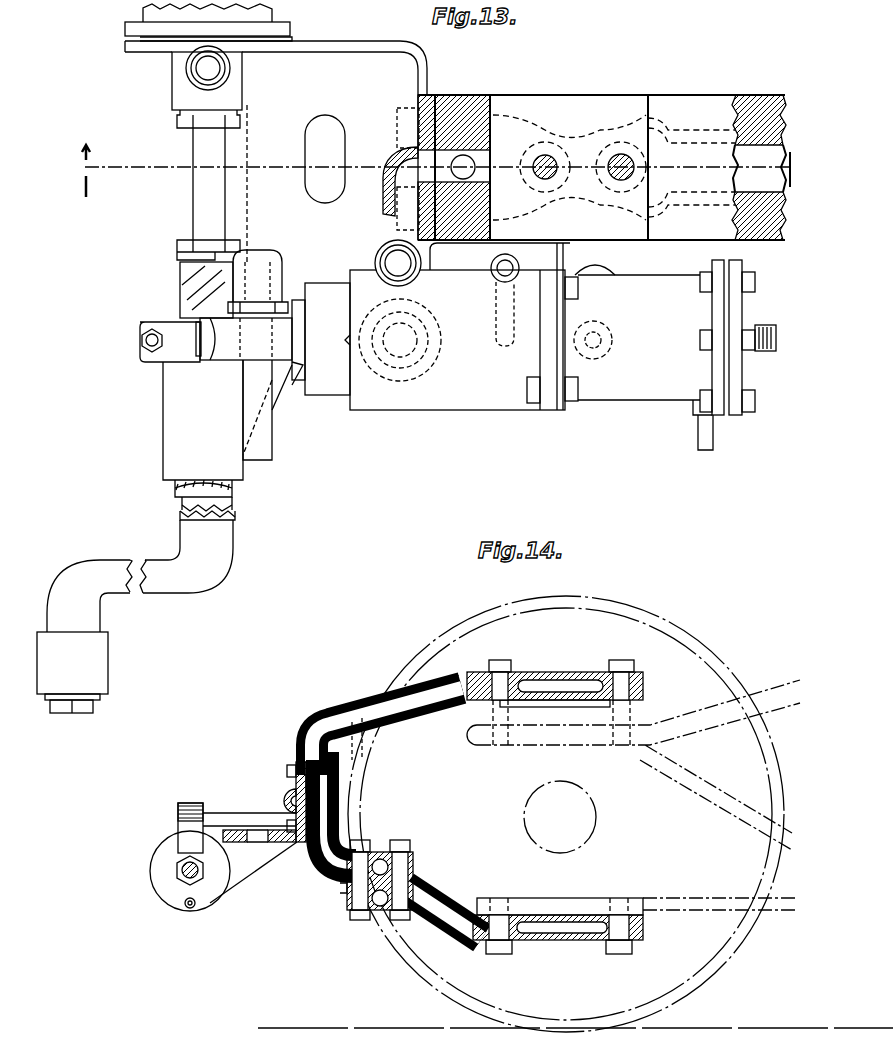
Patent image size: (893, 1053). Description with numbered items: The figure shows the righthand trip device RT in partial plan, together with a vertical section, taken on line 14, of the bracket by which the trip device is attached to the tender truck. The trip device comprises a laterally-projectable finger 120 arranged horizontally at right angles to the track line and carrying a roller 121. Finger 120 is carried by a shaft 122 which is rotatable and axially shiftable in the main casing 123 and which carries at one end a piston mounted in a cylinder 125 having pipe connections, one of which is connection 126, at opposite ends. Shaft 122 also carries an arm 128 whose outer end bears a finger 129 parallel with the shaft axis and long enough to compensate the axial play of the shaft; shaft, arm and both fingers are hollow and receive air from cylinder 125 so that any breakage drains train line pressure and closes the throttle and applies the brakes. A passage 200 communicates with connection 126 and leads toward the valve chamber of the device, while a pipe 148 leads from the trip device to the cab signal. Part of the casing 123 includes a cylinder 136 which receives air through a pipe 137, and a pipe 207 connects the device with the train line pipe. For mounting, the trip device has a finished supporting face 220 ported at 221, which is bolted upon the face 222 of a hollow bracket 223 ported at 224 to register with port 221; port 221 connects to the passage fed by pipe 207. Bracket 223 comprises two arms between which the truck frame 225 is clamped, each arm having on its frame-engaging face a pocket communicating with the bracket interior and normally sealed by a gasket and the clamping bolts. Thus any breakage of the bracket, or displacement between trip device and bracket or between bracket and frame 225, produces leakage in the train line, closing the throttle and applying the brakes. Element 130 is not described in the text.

In FIG. 13, the section line 14- 14 is at (423, 171).
In FIG. 13, the cylinder 125 is at (155, 12).
In FIG. 14, the cylinder 125 is at (212, 888).
In FIG. 13, the pipe connection 126 is at (203, 70).
In FIG. 14, the pipe connection 126 is at (190, 805).
In FIG. 13, the arm 128 is at (272, 270).
In FIG. 13, the finger 129 is at (273, 462).
In FIG. 13, the horizontal cylinder 130 is at (236, 357).
In FIG. 13, the main casing 123 is at (180, 430).
In FIG. 13, the shaft 122 is at (180, 498).
In FIG. 13, the laterally-projectable finger 120 is at (88, 617).
In FIG. 13, the roller 121 is at (105, 672).
In FIG. 13, the finished supporting face 220 is at (418, 101).
In FIG. 14, the finished supporting face 220 is at (297, 783).
In FIG. 13, the port 221 is at (398, 164).
In FIG. 14, the port 221 is at (287, 798).
In FIG. 13, the face of bracket 222 is at (480, 90).
In FIG. 14, the face of bracket 222 is at (312, 790).
In FIG. 13, the bracket 223 is at (648, 82).
In FIG. 14, the bracket 223 is at (358, 710).
In FIG. 13, the port 224 is at (493, 158).
In FIG. 14, the port 224 is at (318, 800).
In FIG. 13, the pipe 207 is at (421, 270).
In FIG. 13, the pipe 148 is at (514, 270).
In FIG. 13, the righthand trip device RT is at (456, 412).
In FIG. 13, the cylinder 136 is at (667, 402).
In FIG. 13, the pipe 137 is at (702, 448).
In FIG. 14, the truck frame 225 is at (722, 792).
In FIG. 14, the passage 200 is at (186, 906).